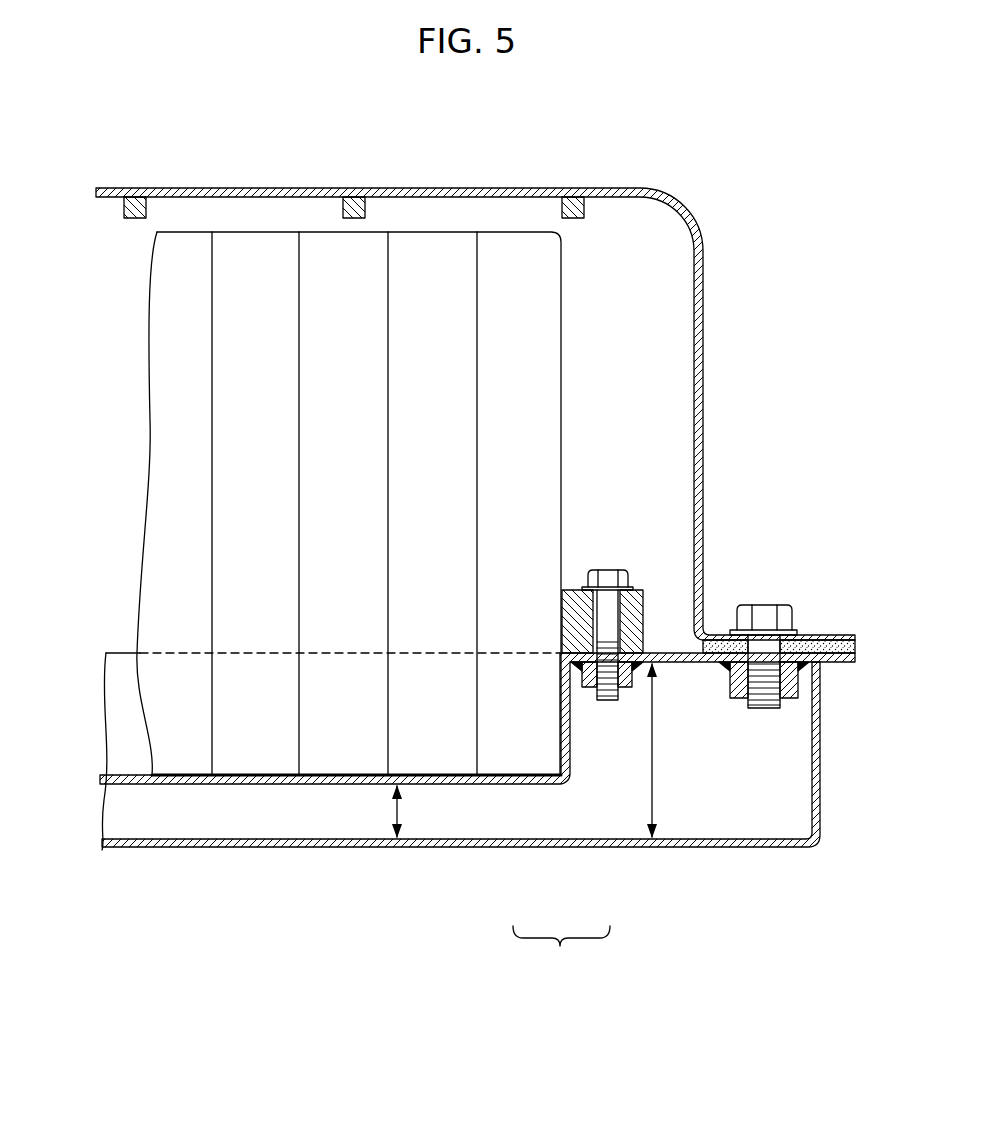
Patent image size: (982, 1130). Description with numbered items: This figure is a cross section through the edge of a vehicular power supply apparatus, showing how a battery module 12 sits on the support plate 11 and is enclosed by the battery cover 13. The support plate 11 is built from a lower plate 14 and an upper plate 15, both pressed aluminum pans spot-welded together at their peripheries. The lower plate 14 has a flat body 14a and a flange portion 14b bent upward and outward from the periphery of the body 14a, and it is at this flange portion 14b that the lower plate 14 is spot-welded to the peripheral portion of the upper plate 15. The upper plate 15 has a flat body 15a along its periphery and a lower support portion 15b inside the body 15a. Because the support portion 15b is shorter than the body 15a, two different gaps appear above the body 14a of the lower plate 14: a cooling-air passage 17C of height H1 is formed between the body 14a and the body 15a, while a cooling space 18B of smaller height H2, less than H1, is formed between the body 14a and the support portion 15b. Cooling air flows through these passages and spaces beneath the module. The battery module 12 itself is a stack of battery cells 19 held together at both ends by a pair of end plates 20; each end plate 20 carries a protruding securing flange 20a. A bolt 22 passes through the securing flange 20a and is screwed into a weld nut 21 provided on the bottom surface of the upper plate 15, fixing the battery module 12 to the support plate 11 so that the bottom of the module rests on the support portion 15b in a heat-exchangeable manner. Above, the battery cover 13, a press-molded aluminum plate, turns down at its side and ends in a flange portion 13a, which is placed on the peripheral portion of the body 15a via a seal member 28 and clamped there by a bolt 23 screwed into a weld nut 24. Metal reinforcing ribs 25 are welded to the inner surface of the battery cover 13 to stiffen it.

The support plate 11 is at (561, 947).
The battery module 12 is at (360, 503).
The battery cover 13 is at (680, 199).
The flange portion 13a is at (820, 635).
The lower plate 14 is at (652, 849).
The body 14a is at (343, 848).
The flange portion 14b is at (845, 663).
The upper plate 15 is at (482, 787).
The body 15a is at (688, 663).
The support portion 15b is at (340, 774).
The cooling-air passage 17C is at (745, 795).
The cooling space 18B is at (272, 818).
The battery cell 19 is at (242, 505).
The end plate 20 is at (517, 502).
The securing flange 20a is at (642, 606).
The weld nut 21 is at (593, 688).
The bolt 22 is at (608, 572).
The bolt 23 is at (760, 605).
The weld nut 24 is at (743, 699).
The reinforcing rib 25 is at (135, 197).
The seal member 28 is at (684, 652).
The height of cooling-air passage H1 is at (668, 750).
The height of cooling space H2 is at (400, 812).